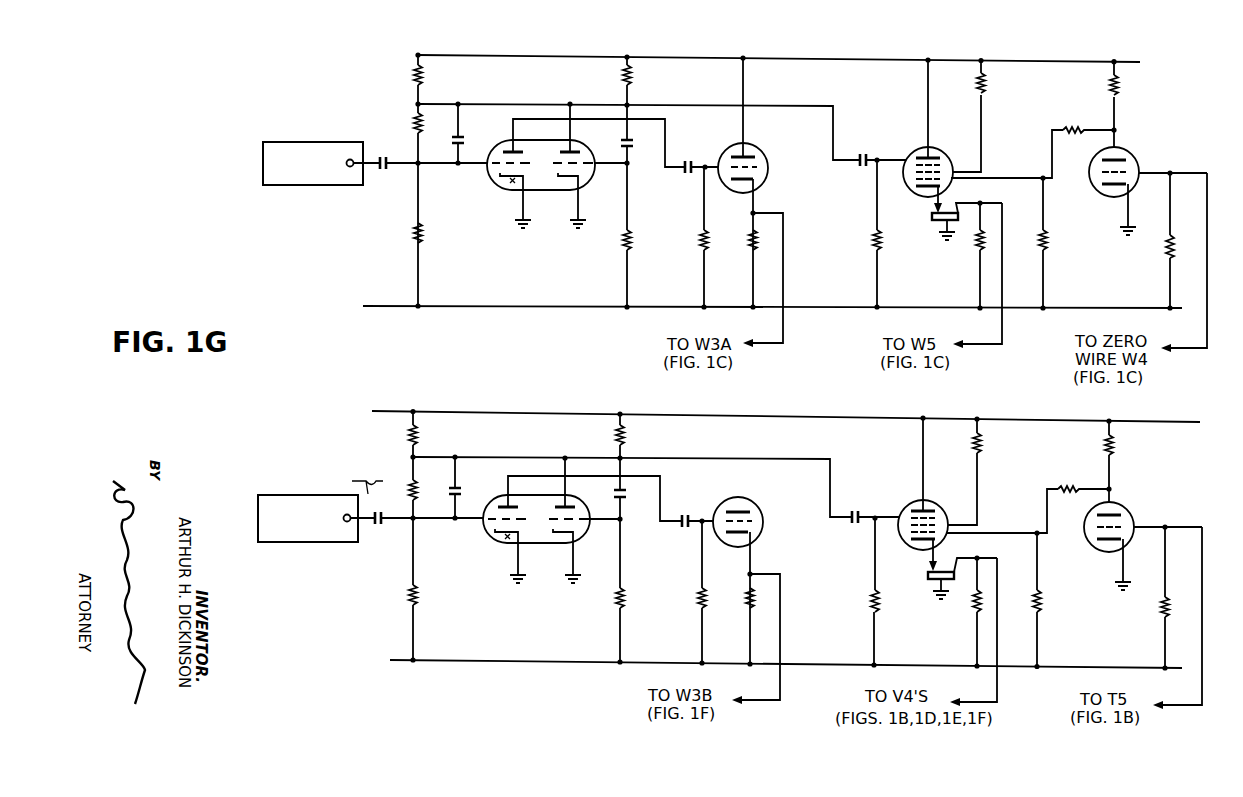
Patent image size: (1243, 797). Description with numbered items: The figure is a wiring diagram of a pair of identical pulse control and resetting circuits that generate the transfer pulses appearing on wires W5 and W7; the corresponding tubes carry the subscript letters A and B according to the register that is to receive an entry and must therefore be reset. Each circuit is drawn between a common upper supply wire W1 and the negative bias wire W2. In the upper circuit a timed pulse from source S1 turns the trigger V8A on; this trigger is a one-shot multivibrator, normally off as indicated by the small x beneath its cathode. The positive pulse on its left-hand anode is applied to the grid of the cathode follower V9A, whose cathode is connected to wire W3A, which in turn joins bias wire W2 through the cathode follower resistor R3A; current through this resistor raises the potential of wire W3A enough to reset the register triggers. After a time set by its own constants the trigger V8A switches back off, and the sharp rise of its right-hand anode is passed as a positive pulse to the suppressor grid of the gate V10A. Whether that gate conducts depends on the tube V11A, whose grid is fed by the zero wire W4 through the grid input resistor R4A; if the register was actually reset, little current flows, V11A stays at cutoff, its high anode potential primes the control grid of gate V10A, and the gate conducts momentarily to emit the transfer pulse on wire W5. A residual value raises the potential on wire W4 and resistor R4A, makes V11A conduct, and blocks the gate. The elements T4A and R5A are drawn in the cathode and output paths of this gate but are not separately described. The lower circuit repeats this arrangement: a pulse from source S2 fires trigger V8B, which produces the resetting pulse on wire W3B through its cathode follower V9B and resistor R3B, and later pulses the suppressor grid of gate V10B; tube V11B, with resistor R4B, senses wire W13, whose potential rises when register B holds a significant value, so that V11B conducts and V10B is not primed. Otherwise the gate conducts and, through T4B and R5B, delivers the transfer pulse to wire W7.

The supply wire W1 is at (712, 56).
The negative bias wire W2 is at (554, 307).
The timed pulse source S1 is at (302, 185).
The trigger V8A is at (492, 181).
The cathode follower tube V9A is at (756, 185).
The gate V10A is at (916, 151).
The tube V11A is at (1100, 196).
The thyratron/relay tube element T4A is at (932, 224).
The cathode follower resistor R3A is at (752, 245).
The wire W3A is at (783, 285).
The resistor R5A is at (977, 250).
The wire W5 is at (1003, 345).
The grid input resistor R4A is at (1162, 248).
The zero wire W4 is at (1148, 173).
The timed pulse source S2 is at (314, 544).
The trigger V8B is at (492, 541).
The triode tube V9B is at (761, 524).
The gate V10B is at (915, 504).
The tube V11B is at (1150, 507).
The thyratron/relay tube element T4B is at (928, 572).
The resistor R3B is at (748, 606).
The wire W3B is at (780, 603).
The resistor R5B is at (970, 611).
The wire W7 is at (997, 660).
The resistor R4B is at (1158, 616).
The wire W13 is at (1203, 698).